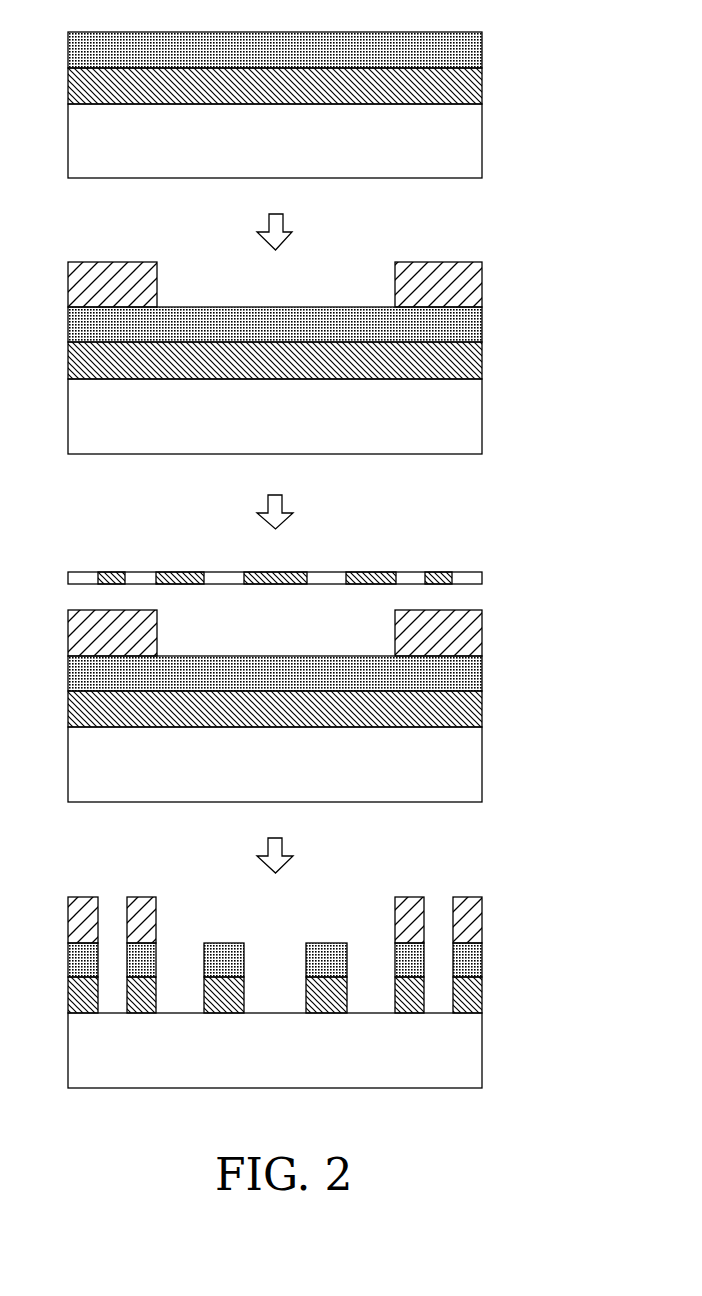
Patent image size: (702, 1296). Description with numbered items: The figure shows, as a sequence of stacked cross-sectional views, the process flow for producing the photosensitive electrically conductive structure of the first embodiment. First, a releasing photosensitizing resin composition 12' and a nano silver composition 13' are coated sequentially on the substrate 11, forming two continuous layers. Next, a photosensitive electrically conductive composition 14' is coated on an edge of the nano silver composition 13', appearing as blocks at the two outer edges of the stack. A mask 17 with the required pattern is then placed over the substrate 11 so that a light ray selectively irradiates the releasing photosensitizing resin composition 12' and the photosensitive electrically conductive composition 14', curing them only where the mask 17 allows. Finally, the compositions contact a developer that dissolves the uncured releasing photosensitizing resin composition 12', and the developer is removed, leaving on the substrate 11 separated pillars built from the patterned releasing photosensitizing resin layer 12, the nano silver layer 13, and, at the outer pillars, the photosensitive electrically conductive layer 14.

The substrate 11 is at (468, 144).
The releasing photosensitizing resin composition 12' is at (310, 397).
The nano silver composition 13' is at (310, 361).
The photosensitive electrically conductive composition 14' is at (310, 459).
The mask 17 is at (443, 575).
The photosensitive electrically conductive layer 14 is at (307, 920).
The nano silver layer 13 is at (307, 960).
The releasing photosensitizing resin layer 12 is at (307, 998).